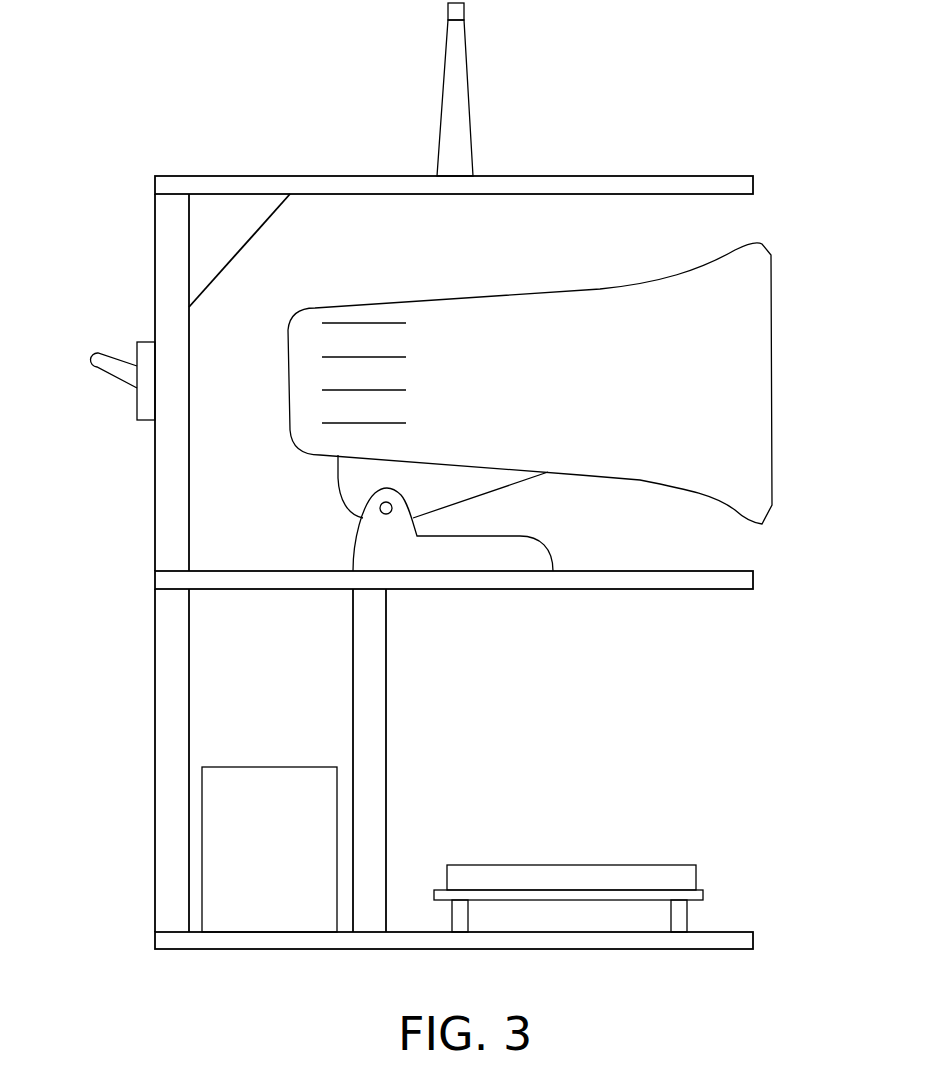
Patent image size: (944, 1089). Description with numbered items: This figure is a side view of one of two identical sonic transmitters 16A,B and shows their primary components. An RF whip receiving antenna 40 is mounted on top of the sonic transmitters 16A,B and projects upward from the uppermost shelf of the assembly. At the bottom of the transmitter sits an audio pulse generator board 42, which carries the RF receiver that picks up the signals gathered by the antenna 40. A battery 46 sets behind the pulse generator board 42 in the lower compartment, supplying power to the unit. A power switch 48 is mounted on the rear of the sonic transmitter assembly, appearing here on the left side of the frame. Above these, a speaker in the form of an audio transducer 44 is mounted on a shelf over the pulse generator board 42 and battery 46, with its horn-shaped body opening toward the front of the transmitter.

The sonic transmitters 16A,B is at (781, 733).
The RF whip receiving antenna 40 is at (468, 76).
The audio pulse generator board 42 is at (703, 895).
The audio transducer 44 is at (772, 326).
The battery 46 is at (307, 767).
The power switch 48 is at (137, 407).